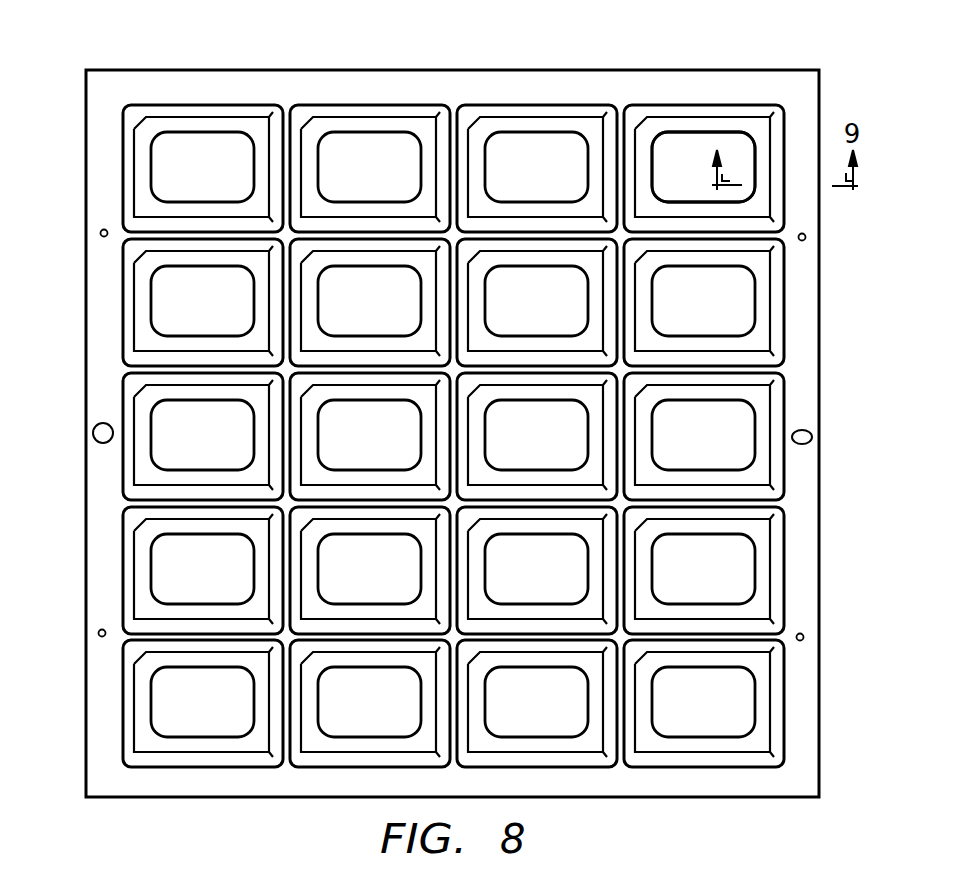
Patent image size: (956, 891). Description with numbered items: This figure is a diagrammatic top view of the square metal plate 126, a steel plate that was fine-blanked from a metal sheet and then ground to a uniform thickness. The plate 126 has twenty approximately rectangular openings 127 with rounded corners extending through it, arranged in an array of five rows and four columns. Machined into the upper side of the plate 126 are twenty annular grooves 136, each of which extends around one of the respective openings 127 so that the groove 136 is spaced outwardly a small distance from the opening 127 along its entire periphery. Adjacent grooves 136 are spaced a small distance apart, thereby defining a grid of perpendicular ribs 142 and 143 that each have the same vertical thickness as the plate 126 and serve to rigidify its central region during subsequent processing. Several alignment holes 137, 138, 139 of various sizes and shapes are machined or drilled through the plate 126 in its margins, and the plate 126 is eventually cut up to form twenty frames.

The square metal plate 126 is at (455, 70).
The openings 127 is at (698, 132).
The annular grooves 136 is at (722, 106).
The alignment hole 137 is at (93, 434).
The alignment hole 138 is at (100, 233).
The alignment hole 139 is at (812, 437).
The ribs 142 is at (289, 116).
The ribs 143 is at (125, 370).